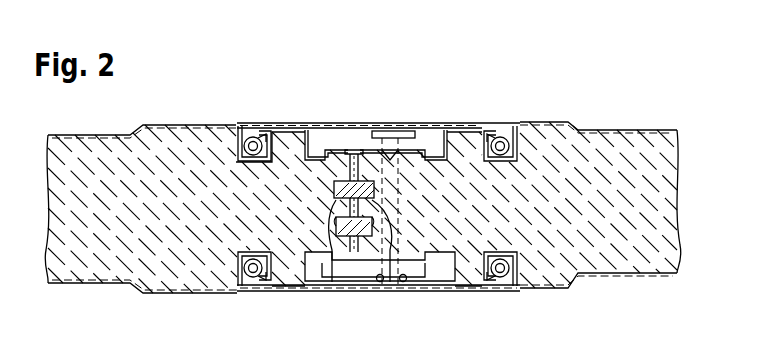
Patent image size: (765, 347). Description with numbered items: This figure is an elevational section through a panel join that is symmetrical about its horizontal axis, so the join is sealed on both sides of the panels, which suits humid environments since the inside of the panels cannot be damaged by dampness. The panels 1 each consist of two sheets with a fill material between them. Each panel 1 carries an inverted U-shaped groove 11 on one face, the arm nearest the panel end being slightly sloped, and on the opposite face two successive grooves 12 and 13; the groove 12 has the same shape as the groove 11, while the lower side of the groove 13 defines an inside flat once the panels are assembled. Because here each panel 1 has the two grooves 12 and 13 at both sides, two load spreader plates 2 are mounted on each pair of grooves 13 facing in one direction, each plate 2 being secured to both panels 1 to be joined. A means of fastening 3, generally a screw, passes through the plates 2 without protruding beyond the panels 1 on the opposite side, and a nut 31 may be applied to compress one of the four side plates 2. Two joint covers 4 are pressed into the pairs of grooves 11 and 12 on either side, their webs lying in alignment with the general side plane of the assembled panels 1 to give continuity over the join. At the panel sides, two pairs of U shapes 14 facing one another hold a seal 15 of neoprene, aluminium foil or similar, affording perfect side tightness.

The panel 1 is at (97, 165).
The load spreader plate 2 is at (336, 142).
The means of fastening 3 is at (440, 290).
The joint cover 4 is at (461, 125).
The groove 11 is at (250, 272).
The groove 12 is at (250, 148).
The groove 13 is at (312, 155).
The U shape 14 is at (377, 148).
The seal 15 is at (338, 245).
The nut 31 is at (405, 283).